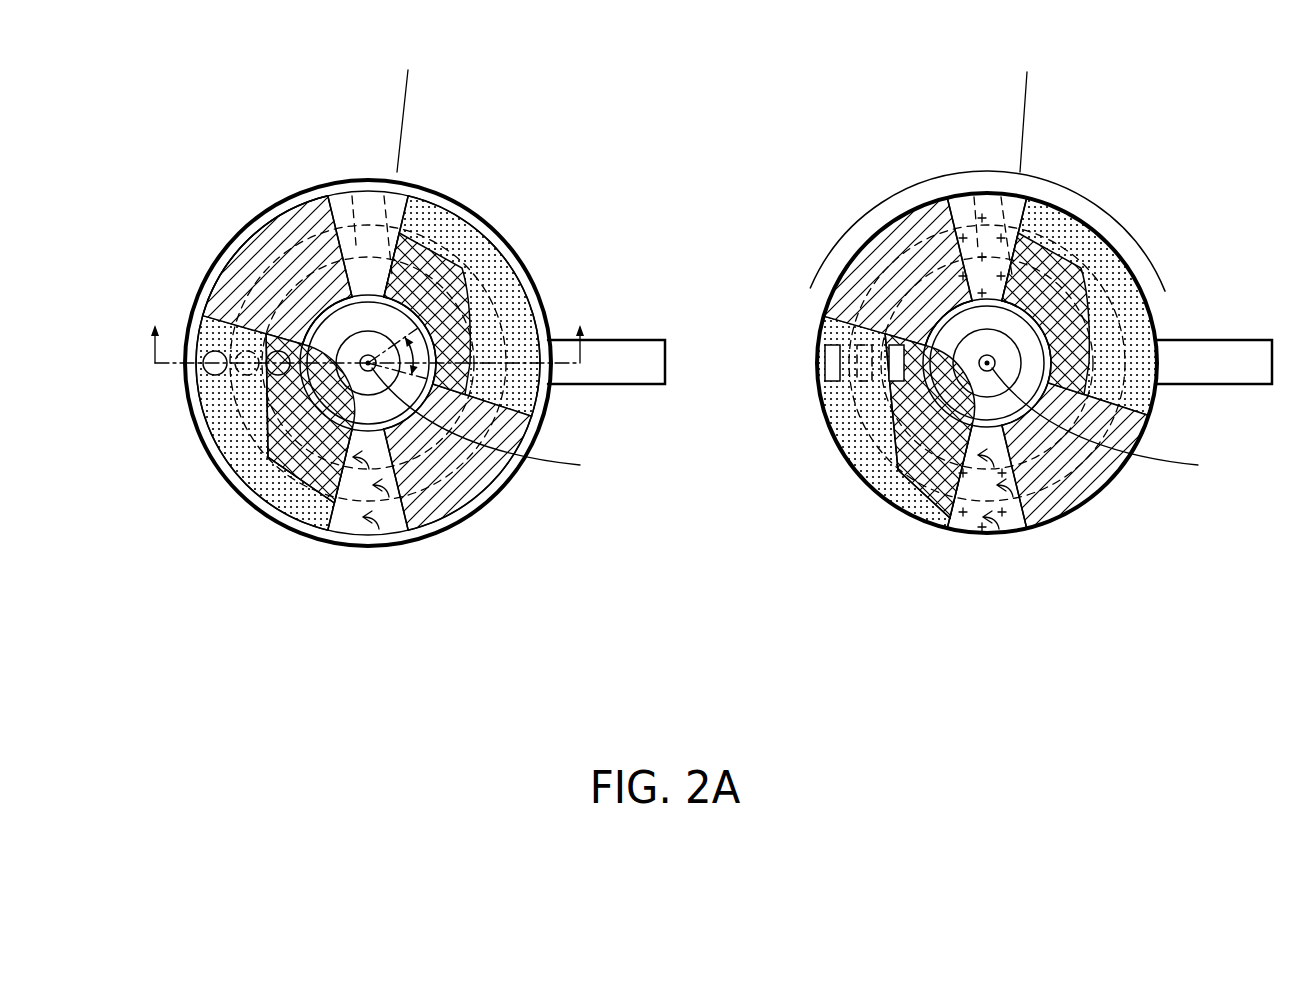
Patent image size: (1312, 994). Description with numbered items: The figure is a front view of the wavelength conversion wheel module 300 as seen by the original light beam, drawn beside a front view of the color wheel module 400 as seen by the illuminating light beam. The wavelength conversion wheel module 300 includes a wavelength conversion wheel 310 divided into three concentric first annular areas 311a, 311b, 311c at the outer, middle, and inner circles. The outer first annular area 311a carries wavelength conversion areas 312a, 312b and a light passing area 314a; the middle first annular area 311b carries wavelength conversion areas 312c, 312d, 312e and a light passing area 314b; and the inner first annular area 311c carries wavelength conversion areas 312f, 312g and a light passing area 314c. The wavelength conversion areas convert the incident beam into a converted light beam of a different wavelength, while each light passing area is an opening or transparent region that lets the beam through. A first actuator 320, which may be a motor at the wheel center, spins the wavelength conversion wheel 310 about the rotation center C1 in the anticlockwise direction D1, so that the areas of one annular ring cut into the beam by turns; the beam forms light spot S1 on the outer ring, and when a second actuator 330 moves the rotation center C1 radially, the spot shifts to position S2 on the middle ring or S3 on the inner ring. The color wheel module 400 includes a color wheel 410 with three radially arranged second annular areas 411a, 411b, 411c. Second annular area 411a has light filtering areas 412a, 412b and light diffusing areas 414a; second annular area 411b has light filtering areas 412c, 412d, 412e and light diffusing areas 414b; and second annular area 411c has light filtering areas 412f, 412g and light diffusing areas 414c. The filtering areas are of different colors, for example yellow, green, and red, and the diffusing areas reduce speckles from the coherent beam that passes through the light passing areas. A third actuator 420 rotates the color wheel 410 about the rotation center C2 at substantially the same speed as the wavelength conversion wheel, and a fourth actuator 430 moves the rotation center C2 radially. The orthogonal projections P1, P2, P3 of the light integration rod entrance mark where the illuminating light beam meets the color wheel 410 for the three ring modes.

The wavelength conversion wheel module 300 is at (397, 367).
The wavelength conversion wheel 310 is at (495, 240).
The first annular area 311a is at (382, 520).
The first annular area 311b is at (403, 535).
The first annular area 311c is at (347, 487).
The wavelength conversion area 312a is at (440, 211).
The wavelength conversion area 312b is at (528, 512).
The wavelength conversion area 312c is at (303, 475).
The wavelength conversion area 312d is at (458, 295).
The wavelength conversion area 312e is at (243, 283).
The wavelength conversion area 312f is at (268, 440).
The wavelength conversion area 312g is at (273, 287).
The light passing area 314a is at (368, 205).
The light passing area 314b is at (345, 225).
The light passing area 314c is at (402, 210).
The first actuator 320 is at (378, 370).
The second actuator 330 is at (606, 352).
The light spot S1 is at (203, 366).
The light spot S2 is at (240, 374).
The light spot S3 is at (188, 288).
The direction D1 is at (715, 106).
The rotation center C1 is at (492, 426).
The color wheel module 400 is at (1006, 367).
The color wheel 410 is at (1155, 320).
The second annular area 411a is at (990, 520).
The second annular area 411b is at (1013, 530).
The second annular area 411c is at (967, 503).
The light filtering area 412a is at (1060, 215).
The light filtering area 412b is at (1123, 510).
The light filtering area 412c is at (910, 483).
The light filtering area 412d is at (887, 485).
The light filtering area 412e is at (875, 298).
The light filtering area 412f is at (883, 440).
The light filtering area 412g is at (918, 303).
The light diffusing area 414a is at (988, 200).
The light diffusing area 414b is at (960, 205).
The light diffusing area 414c is at (1022, 205).
The third actuator 420 is at (995, 368).
The fourth actuator 430 is at (1227, 350).
The orthogonal projection P1 is at (825, 368).
The orthogonal projection P2 is at (858, 378).
The orthogonal projection P3 is at (805, 286).
The rotation center C2 is at (1113, 426).